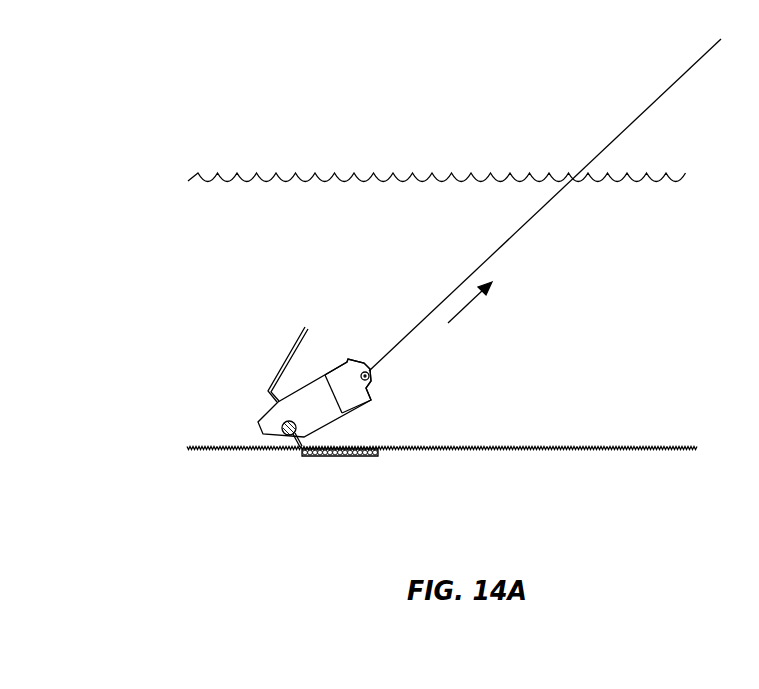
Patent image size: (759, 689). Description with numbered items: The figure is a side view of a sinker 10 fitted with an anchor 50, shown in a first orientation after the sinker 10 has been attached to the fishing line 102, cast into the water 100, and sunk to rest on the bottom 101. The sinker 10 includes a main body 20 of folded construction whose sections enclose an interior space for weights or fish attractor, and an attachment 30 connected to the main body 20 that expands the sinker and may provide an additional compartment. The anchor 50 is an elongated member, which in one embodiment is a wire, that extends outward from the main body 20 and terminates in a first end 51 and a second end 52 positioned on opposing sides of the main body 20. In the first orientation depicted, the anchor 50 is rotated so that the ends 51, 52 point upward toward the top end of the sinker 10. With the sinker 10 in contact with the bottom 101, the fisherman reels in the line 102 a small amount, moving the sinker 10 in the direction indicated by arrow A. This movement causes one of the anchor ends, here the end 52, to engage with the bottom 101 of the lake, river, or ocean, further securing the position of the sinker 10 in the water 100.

The sinker 10 is at (298, 414).
The main body 20 is at (323, 407).
The attachment 30 is at (336, 377).
The anchor 50 is at (332, 455).
The first end 51 is at (301, 328).
The second end 52 is at (377, 451).
The water 100 is at (640, 178).
The bottom 101 is at (622, 447).
The fishing line 102 is at (468, 277).
The arrow A is at (465, 307).